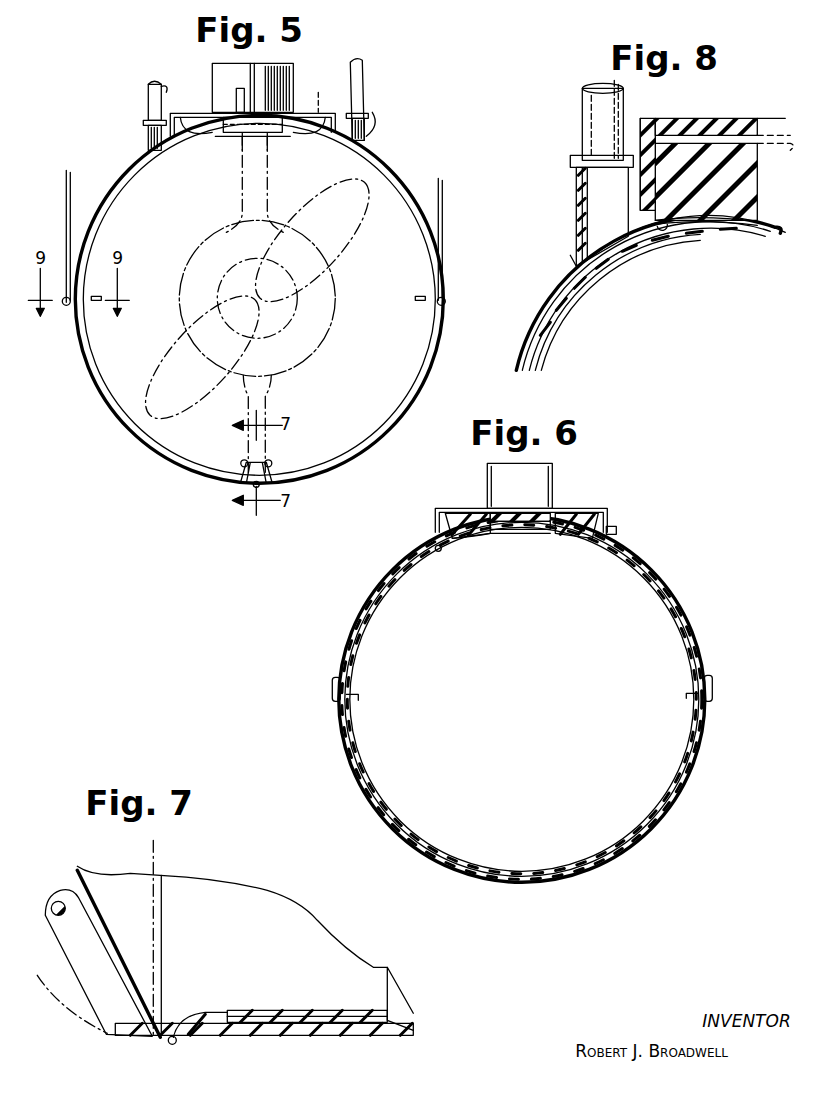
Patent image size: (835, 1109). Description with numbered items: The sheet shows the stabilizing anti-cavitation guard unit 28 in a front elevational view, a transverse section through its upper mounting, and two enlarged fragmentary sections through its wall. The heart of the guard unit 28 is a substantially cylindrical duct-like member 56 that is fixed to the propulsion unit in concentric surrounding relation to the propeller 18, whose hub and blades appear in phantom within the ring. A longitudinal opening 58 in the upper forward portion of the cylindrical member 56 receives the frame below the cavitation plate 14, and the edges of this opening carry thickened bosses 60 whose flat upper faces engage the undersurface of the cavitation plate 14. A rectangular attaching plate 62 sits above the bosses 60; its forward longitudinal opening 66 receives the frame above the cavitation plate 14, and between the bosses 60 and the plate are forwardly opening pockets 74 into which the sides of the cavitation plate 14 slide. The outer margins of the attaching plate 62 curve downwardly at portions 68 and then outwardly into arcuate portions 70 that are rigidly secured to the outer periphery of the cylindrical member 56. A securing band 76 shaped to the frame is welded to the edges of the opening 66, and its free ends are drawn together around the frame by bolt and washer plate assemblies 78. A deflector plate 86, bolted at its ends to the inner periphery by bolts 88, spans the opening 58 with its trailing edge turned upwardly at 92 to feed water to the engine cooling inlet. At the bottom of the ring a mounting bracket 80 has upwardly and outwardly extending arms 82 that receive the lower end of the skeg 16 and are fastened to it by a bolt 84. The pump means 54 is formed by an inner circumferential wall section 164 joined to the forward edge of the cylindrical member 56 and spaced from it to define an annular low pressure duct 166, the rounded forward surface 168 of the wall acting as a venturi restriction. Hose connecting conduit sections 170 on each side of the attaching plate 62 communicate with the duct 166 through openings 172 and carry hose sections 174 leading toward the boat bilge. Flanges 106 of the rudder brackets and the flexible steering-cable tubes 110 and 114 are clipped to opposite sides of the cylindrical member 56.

In FIG. 5, the cavitation plate 14 is at (323, 92).
In FIG. 8, the cavitation plate 14 is at (740, 119).
In FIG. 5, the skeg 16 is at (262, 396).
In FIG. 7, the skeg 16 is at (30, 1013).
In FIG. 5, the propeller 18 is at (342, 226).
In FIG. 5, the stabilizing anti-cavitation guard unit 28 is at (424, 150).
In FIG. 8, the stabilizing anti-cavitation guard unit 28 is at (515, 329).
In FIG. 6, the stabilizing anti-cavitation guard unit 28 is at (702, 556).
In FIG. 7, the stabilizing anti-cavitation guard unit 28 is at (333, 1045).
In FIG. 5, the pump means 54 is at (381, 106).
In FIG. 8, the pump means 54 is at (566, 237).
In FIG. 6, the pump means 54 is at (393, 566).
In FIG. 7, the pump means 54 is at (404, 1009).
In FIG. 5, the cylindrical member 56 is at (174, 455).
In FIG. 8, the cylindrical member 56 is at (512, 358).
In FIG. 6, the cylindrical member 56 is at (373, 815).
In FIG. 7, the cylindrical member 56 is at (372, 1036).
In FIG. 5, the longitudinal opening 58 is at (283, 132).
In FIG. 8, the longitudinal opening 58 is at (780, 226).
In FIG. 6, the longitudinal opening 58 is at (545, 530).
In FIG. 5, the bosses 60 is at (186, 125).
In FIG. 8, the bosses 60 is at (748, 168).
In FIG. 6, the bosses 60 is at (456, 512).
In FIG. 5, the attaching plate 62 is at (295, 82).
In FIG. 8, the attaching plate 62 is at (648, 117).
In FIG. 5, the forward longitudinal opening 66 is at (222, 107).
In FIG. 5, the downwardly curved marginal portions 68 is at (146, 118).
In FIG. 8, the downwardly curved marginal portions 68 is at (640, 138).
In FIG. 6, the downwardly curved marginal portions 68 is at (436, 522).
In FIG. 5, the arcuate portions 70 is at (366, 134).
In FIG. 8, the arcuate portions 70 is at (572, 262).
In FIG. 6, the arcuate portions 70 is at (617, 530).
In FIG. 5, the pockets 74 is at (196, 132).
In FIG. 8, the pockets 74 is at (688, 130).
In FIG. 6, the pockets 74 is at (478, 534).
In FIG. 5, the securing band 76 is at (213, 70).
In FIG. 6, the securing band 76 is at (553, 490).
In FIG. 5, the bolt and washer plate assemblies 78 is at (264, 152).
In FIG. 5, the mounting bracket 80 is at (246, 483).
In FIG. 7, the mounting bracket 80 is at (173, 1045).
In FIG. 5, the arms 82 is at (268, 470).
In FIG. 7, the arms 82 is at (63, 948).
In FIG. 5, the bolt 84 is at (244, 460).
In FIG. 7, the bolt 84 is at (60, 900).
In FIG. 5, the deflector plate 86 is at (241, 160).
In FIG. 8, the deflector plate 86 is at (686, 236).
In FIG. 6, the deflector plate 86 is at (524, 534).
In FIG. 8, the bolts 88 is at (668, 262).
In FIG. 6, the bolts 88 is at (441, 552).
In FIG. 6, the upturned trailing edge 92 is at (500, 512).
In FIG. 5, the flange 106 is at (96, 302).
In FIG. 6, the flange 106 is at (357, 699).
In FIG. 5, the flexible tube 110 is at (442, 199).
In FIG. 6, the flexible tube 110 is at (712, 683).
In FIG. 5, the flexible tube 114 is at (62, 200).
In FIG. 6, the flexible tube 114 is at (331, 686).
In FIG. 8, the inner circumferential wall section 164 is at (540, 356).
In FIG. 6, the inner circumferential wall section 164 is at (355, 645).
In FIG. 7, the inner circumferential wall section 164 is at (308, 1010).
In FIG. 8, the annular low pressure duct 166 is at (566, 320).
In FIG. 6, the annular low pressure duct 166 is at (680, 641).
In FIG. 7, the annular low pressure duct 166 is at (326, 1014).
In FIG. 7, the rounded forward surface 168 is at (175, 1022).
In FIG. 5, the hose connecting conduit section 170 is at (148, 135).
In FIG. 8, the hose connecting conduit section 170 is at (576, 185).
In FIG. 8, the opening 172 is at (608, 278).
In FIG. 5, the hose section 174 is at (148, 90).
In FIG. 8, the hose section 174 is at (582, 110).